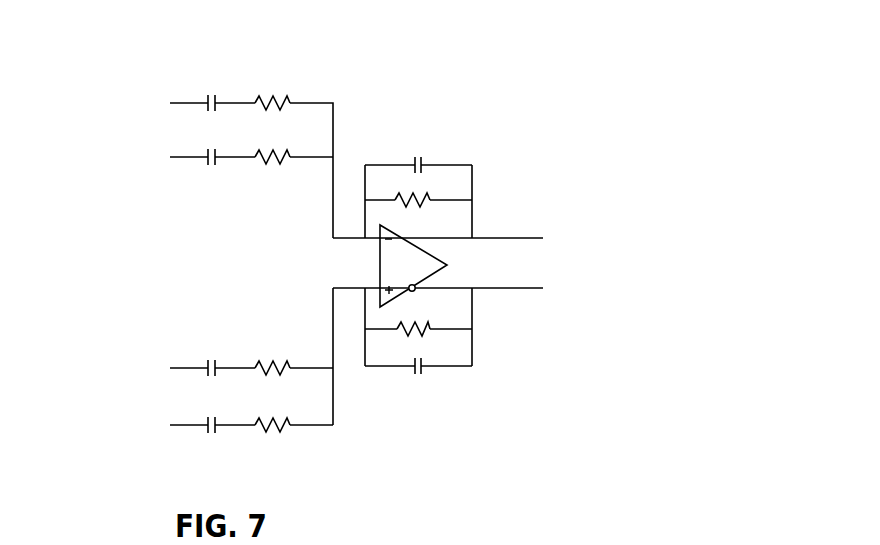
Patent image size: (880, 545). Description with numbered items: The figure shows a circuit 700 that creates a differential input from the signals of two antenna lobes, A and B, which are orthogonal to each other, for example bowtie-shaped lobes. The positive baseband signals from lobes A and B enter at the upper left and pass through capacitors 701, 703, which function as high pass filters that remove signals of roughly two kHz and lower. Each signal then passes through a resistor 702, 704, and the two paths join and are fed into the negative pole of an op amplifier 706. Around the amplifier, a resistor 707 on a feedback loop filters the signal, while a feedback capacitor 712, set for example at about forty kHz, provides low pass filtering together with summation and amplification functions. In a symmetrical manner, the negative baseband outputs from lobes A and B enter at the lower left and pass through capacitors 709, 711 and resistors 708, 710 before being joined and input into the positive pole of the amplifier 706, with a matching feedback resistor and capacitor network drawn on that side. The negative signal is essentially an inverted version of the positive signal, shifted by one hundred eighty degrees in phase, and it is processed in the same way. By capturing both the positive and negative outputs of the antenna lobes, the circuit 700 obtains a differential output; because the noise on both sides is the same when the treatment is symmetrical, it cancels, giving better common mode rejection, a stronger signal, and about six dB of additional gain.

The circuit 700 is at (97, 118).
The capacitor 701 is at (209, 101).
The resistor 702 is at (267, 98).
The capacitor 703 is at (209, 158).
The resistor 704 is at (261, 163).
The op amplifier 706 is at (433, 253).
The resistor 707 is at (410, 193).
The resistor 708 is at (262, 362).
The capacitor 709 is at (209, 365).
The resistor 710 is at (268, 431).
The capacitor 711 is at (209, 428).
The capacitor 712 is at (423, 161).